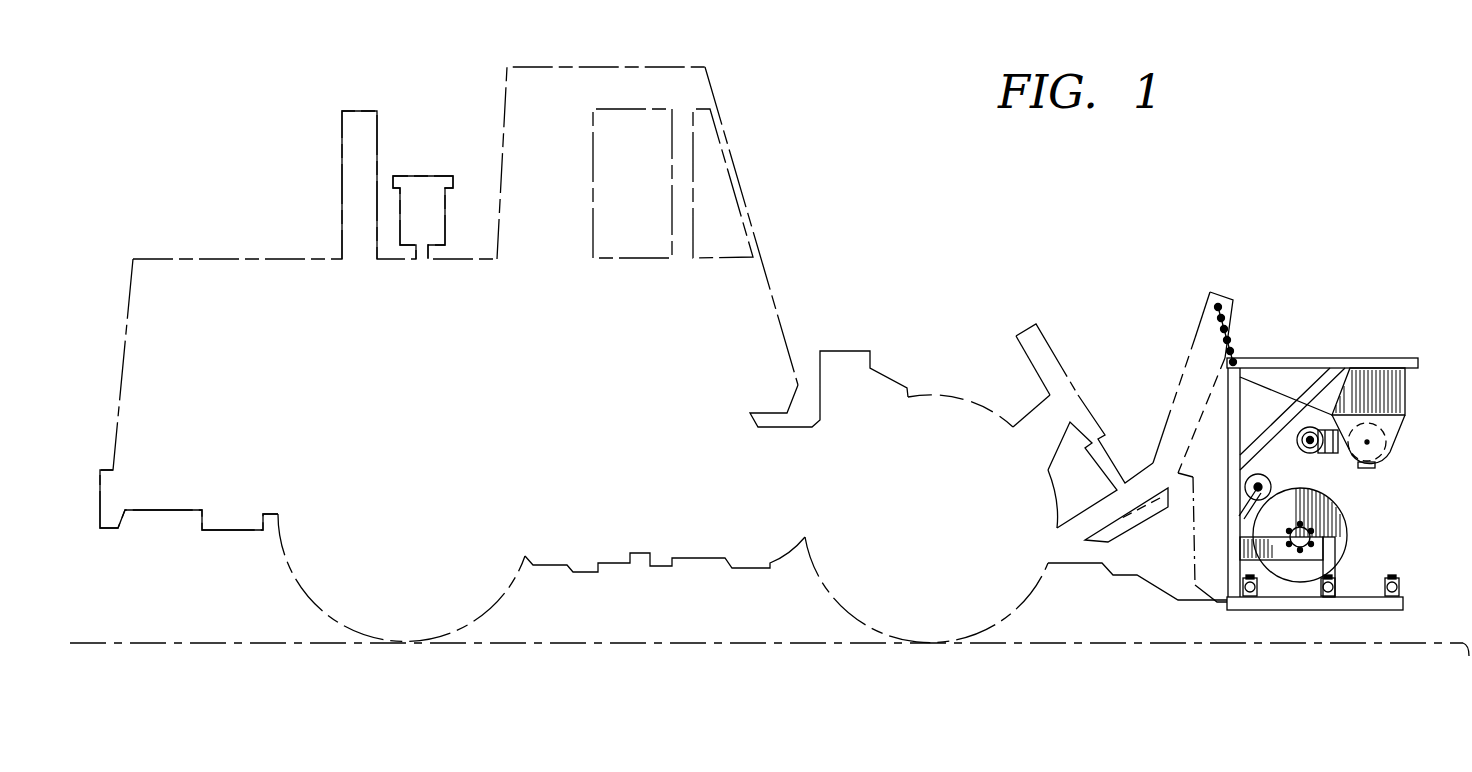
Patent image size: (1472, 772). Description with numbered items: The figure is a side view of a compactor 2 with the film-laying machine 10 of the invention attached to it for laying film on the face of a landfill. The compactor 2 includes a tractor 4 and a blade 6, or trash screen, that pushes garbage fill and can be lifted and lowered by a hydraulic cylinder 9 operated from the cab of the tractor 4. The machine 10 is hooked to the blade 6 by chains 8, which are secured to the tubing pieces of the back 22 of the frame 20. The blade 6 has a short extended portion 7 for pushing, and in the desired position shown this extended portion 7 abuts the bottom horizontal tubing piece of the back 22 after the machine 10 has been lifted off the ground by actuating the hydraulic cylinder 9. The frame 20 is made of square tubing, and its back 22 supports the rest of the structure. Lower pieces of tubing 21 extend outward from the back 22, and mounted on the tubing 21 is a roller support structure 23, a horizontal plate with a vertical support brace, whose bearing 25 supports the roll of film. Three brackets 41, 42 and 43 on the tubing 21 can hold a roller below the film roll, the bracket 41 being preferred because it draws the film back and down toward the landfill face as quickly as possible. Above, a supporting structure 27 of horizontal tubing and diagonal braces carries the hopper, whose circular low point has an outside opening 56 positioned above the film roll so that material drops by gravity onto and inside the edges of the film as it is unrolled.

The compactor 2 is at (614, 62).
The tractor 4 is at (767, 278).
The blade 6 is at (1197, 340).
The extended portion 7 is at (1222, 603).
The chains 8 is at (1232, 346).
The hydraulic cylinder 9 is at (1047, 340).
The machine 10 is at (1363, 280).
The frame 20 is at (1370, 350).
The tubing 21 is at (1396, 610).
The back 22 is at (1232, 462).
The roller support structure 23 is at (1333, 550).
The bearing 25 is at (1315, 537).
The supporting structure 27 is at (1300, 360).
The bracket 41 is at (1258, 592).
The bracket 42 is at (1347, 592).
The bracket 43 is at (1402, 587).
The outside opening 56 is at (1373, 470).